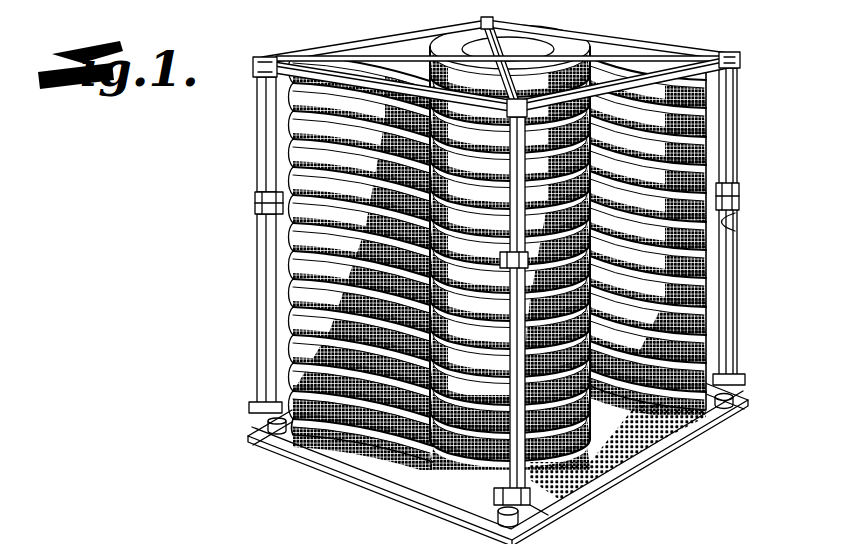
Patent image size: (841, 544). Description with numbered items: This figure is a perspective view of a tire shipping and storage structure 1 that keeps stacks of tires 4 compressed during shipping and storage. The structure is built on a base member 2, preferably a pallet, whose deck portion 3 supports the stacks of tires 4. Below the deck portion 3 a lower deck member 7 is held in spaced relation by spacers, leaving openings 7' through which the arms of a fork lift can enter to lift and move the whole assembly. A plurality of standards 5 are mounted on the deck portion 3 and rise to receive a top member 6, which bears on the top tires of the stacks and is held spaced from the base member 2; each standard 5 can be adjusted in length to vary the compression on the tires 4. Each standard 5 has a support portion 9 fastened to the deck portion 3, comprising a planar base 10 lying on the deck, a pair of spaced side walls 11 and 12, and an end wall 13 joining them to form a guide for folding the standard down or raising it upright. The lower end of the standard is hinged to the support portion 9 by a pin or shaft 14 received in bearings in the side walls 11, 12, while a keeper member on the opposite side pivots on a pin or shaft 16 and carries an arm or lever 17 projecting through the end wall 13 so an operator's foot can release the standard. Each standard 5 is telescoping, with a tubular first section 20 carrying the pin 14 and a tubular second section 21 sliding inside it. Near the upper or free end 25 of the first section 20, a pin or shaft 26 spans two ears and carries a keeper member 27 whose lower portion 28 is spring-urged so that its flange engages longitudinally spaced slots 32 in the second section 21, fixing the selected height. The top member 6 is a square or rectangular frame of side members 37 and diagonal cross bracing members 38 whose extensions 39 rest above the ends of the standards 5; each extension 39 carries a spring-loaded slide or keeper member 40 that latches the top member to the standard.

The tire shipping and storage structure 1 is at (731, 38).
The base member 2 is at (299, 435).
The deck portion 3 is at (392, 445).
The stacks of tires 4 is at (555, 48).
The standards 5 is at (257, 262).
The top member 6 is at (300, 47).
The lower deck member 7 is at (380, 490).
The openings 7' is at (630, 472).
The support portion 9 is at (543, 515).
The planar base 10 is at (493, 490).
The side wall 11 is at (733, 368).
The side wall 12 is at (745, 378).
The end wall 13 is at (462, 527).
The pin or shaft 14 is at (252, 410).
The pin or shaft 16 is at (530, 512).
The arm or lever 17 is at (750, 400).
The tubular first section 20 is at (258, 322).
The tubular second section 21 is at (258, 126).
The upper or free end 25 is at (257, 194).
The pin or shaft 26 is at (501, 266).
The keeper member 27 is at (738, 207).
The lower portion 28 is at (735, 222).
The slots 32 is at (735, 178).
The side members 37 is at (627, 38).
The diagonal cross bracing members 38 is at (421, 40).
The extensions 39 is at (741, 50).
The slide or keeper member 40 is at (262, 60).